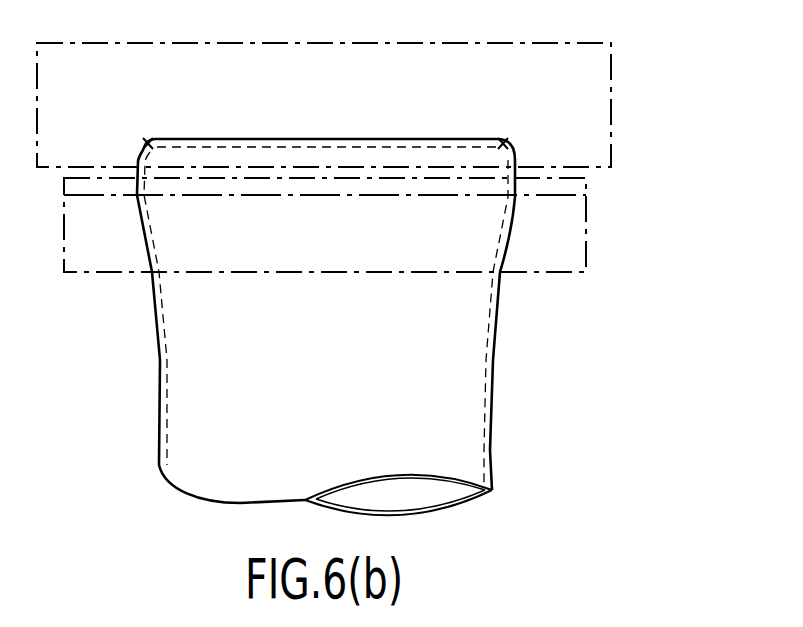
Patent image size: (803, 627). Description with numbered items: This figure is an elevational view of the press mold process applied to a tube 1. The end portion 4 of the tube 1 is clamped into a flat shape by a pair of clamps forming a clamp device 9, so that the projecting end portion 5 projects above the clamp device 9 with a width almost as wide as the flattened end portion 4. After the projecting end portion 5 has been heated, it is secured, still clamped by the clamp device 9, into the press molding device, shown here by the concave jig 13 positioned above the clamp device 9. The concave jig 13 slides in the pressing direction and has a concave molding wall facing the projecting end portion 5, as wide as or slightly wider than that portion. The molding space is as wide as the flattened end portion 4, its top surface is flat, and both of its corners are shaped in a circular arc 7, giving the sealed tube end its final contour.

The tube 1 is at (509, 369).
The end portion 4 is at (196, 260).
The projecting end portion 5 is at (372, 157).
The circular arc 7 is at (143, 142).
The clamp device 9 is at (588, 228).
The concave jig 13 is at (612, 75).